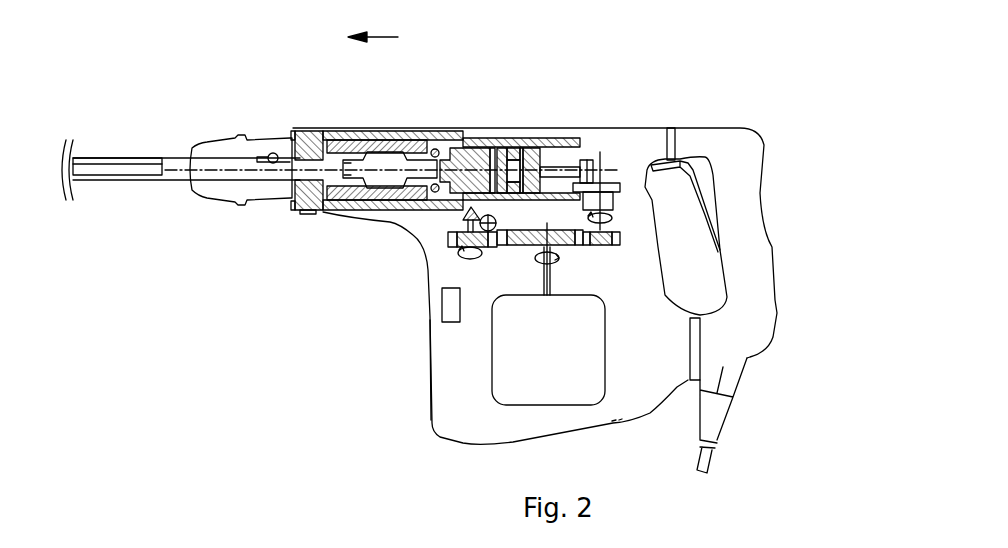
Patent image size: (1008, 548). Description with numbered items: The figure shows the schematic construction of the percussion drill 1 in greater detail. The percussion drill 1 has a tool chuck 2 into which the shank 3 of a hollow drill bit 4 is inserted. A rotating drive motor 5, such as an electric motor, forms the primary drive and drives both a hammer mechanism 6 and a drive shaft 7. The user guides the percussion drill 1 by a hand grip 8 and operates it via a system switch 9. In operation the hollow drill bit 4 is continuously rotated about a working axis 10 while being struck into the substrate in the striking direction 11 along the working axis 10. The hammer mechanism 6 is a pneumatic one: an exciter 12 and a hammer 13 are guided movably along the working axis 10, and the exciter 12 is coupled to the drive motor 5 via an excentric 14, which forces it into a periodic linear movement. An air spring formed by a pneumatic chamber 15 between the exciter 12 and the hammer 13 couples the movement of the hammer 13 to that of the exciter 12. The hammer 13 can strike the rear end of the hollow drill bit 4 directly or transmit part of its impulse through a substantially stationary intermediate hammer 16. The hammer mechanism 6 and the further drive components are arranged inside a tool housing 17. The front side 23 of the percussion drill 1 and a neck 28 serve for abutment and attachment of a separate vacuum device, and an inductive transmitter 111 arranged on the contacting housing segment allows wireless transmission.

The percussion drill 1 is at (259, 41).
The tool chuck 2 is at (228, 153).
The shank 3 is at (247, 165).
The hollow drill bit 4 is at (160, 160).
The drive motor 5 is at (500, 377).
The hammer mechanism 6 is at (540, 86).
The drive shaft 7 is at (337, 130).
The hand grip 8 is at (753, 220).
The system switch 9 is at (702, 178).
The working axis 10 is at (198, 167).
The striking direction 11 is at (387, 37).
The exciter 12 is at (507, 143).
The hammer 13 is at (470, 160).
The excentric 14 is at (588, 160).
The pneumatic chamber 15 is at (490, 143).
The intermediate hammer 16 is at (385, 160).
The tool housing 17 is at (627, 137).
The front side 23 is at (425, 328).
The neck 28 is at (313, 215).
The inductive transmitter 111 is at (442, 303).